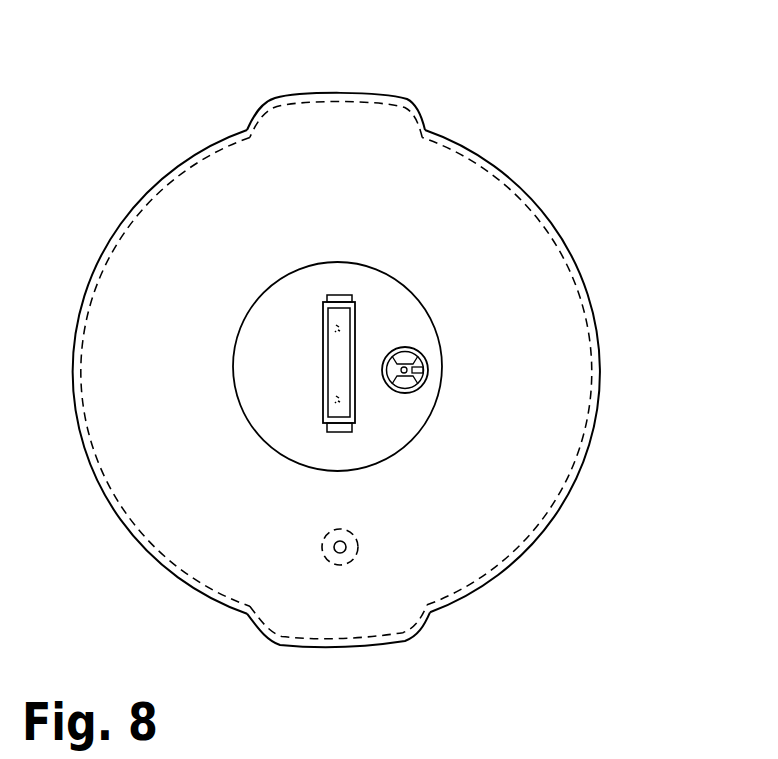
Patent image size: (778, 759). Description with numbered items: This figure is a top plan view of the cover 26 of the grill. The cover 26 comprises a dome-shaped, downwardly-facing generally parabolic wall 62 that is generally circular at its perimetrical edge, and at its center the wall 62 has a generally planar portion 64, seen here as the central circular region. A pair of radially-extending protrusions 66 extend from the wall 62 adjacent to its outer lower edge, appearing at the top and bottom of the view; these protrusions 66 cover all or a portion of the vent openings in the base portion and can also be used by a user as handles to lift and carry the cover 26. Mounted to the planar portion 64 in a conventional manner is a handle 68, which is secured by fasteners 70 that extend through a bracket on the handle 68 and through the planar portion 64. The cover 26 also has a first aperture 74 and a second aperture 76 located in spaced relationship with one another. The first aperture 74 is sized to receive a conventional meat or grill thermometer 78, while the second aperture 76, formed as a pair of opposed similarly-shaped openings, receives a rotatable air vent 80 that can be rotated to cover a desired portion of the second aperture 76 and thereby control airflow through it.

The cover 26 is at (552, 176).
The parabolic wall 62 is at (575, 258).
The planar portion 64 is at (390, 271).
The protrusions 66 is at (388, 140).
The handle 68 is at (322, 304).
The fasteners 70 is at (330, 325).
The first aperture 74 is at (332, 537).
The second aperture 76 is at (421, 346).
The thermometer 78 is at (341, 566).
The rotatable air vent 80 is at (424, 368).